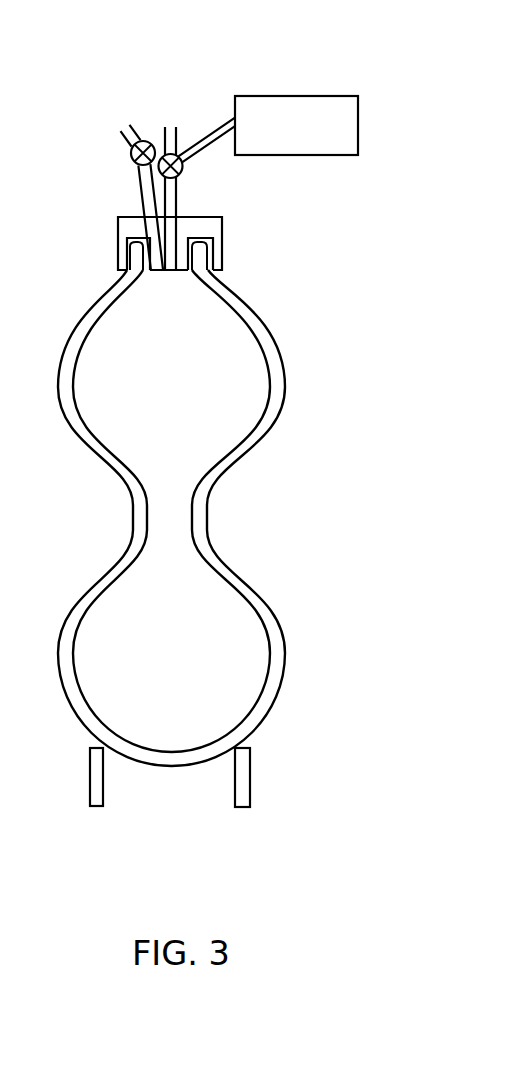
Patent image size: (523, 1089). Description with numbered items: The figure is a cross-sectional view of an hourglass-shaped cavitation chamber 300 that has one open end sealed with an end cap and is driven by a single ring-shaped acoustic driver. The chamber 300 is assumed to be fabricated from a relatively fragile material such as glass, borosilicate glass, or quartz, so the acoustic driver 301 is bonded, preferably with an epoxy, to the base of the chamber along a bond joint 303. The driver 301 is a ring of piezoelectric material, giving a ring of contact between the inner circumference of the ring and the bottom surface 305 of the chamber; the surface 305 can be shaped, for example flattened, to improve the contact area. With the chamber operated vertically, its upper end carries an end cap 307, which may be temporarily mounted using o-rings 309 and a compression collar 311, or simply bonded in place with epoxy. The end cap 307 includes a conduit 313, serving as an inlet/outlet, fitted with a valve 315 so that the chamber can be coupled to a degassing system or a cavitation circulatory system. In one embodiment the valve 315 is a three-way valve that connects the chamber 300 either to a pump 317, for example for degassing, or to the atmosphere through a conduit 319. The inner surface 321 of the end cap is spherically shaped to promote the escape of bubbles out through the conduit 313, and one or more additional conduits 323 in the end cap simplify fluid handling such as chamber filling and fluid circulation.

The chamber 300 is at (297, 503).
The acoustic driver 301 is at (250, 765).
The bond joint 303 is at (113, 757).
The bottom surface 305 is at (170, 767).
The end cap 307 is at (207, 227).
The o-rings 309 is at (145, 262).
The compression collar 311 is at (222, 263).
The conduit 313 is at (176, 210).
The valve 315 is at (183, 172).
The pump 317 is at (297, 95).
The conduit 319 is at (177, 133).
The inner surface 321 is at (182, 271).
The additional conduits 323 is at (148, 202).